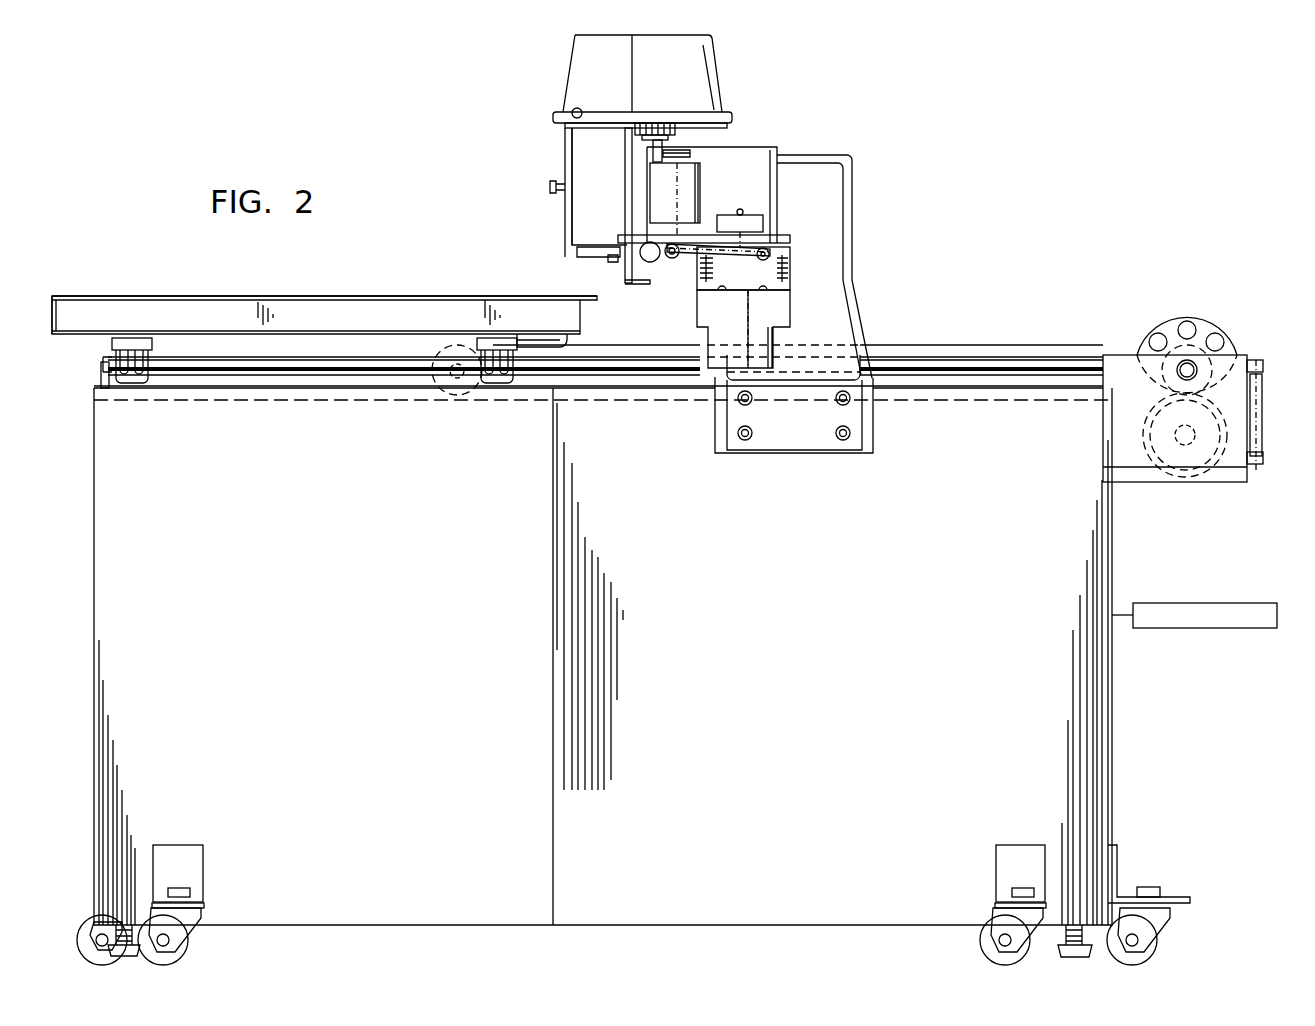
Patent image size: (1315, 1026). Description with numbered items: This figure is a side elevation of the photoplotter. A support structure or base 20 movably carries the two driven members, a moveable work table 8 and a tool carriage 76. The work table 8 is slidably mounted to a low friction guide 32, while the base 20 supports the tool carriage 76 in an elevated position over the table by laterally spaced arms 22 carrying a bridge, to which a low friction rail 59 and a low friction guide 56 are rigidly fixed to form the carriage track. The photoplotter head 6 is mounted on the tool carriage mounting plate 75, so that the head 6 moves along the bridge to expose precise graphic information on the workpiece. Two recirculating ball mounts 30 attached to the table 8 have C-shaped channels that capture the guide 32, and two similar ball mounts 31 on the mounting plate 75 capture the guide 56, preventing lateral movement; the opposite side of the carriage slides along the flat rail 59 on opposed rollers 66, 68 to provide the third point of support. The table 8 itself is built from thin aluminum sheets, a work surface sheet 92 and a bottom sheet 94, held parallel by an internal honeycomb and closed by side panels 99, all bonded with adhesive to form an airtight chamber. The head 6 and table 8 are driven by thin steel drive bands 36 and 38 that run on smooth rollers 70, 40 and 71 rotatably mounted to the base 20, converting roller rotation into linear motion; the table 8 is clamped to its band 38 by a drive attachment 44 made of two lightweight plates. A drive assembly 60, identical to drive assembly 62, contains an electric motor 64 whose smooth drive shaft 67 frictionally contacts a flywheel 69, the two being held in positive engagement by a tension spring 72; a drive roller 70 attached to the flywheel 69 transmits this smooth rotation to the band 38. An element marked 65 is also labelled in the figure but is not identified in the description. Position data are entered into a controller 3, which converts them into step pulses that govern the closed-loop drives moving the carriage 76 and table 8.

The controller 3 is at (1237, 603).
The photoplotter head 6 is at (563, 148).
The work table 8 is at (306, 300).
The base 20 is at (1100, 537).
The arms 22 is at (853, 232).
The recirculating ball mounts 30 is at (178, 334).
The ball mounts 31 is at (626, 262).
The low friction guide 32 is at (276, 375).
The drive band 36 is at (700, 190).
The drive band 38 is at (993, 345).
The roller 40 is at (440, 352).
The drive attachment 44 is at (566, 340).
The low friction guide 56 is at (652, 262).
The low friction rail 59 is at (648, 150).
The drive assembly 60 is at (1238, 320).
The drive assembly 62 is at (806, 260).
The electric motor 64 is at (1248, 480).
The carriage bracket 65 is at (773, 320).
The roller 66 is at (650, 125).
The drive shaft 67 is at (1185, 435).
The roller 68 is at (673, 135).
The flywheel 69 is at (1165, 318).
The drive roller 70 is at (1192, 350).
The drive roller 71 is at (700, 230).
The tension spring 72 is at (1265, 413).
The tool carriage mounting plate 75 is at (627, 200).
The tool carriage 76 is at (763, 130).
The table work surface sheet 92 is at (232, 297).
The table bottom surface sheet 94 is at (226, 334).
The side panels 99 is at (137, 302).